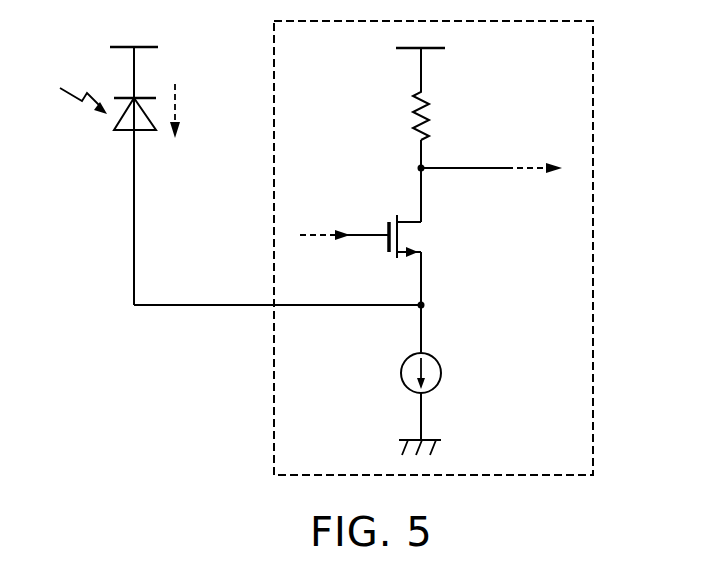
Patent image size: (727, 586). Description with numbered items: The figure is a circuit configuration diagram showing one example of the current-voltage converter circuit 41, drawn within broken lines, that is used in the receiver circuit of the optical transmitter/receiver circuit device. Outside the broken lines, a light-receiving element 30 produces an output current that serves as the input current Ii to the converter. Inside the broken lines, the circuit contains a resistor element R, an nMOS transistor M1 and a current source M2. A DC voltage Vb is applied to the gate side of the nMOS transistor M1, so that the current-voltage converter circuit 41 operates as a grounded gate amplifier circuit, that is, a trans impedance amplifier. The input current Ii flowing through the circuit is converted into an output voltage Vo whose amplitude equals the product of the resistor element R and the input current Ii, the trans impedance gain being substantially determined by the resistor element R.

The light-receiving element 30 is at (127, 89).
The current-voltage converter circuit 41 is at (593, 50).
The resistor element R is at (409, 114).
The nMOS transistor M1 is at (379, 249).
The current source M2 is at (402, 373).
The output voltage Vo is at (491, 156).
The DC voltage Vb is at (325, 224).
The input current Ii is at (182, 111).